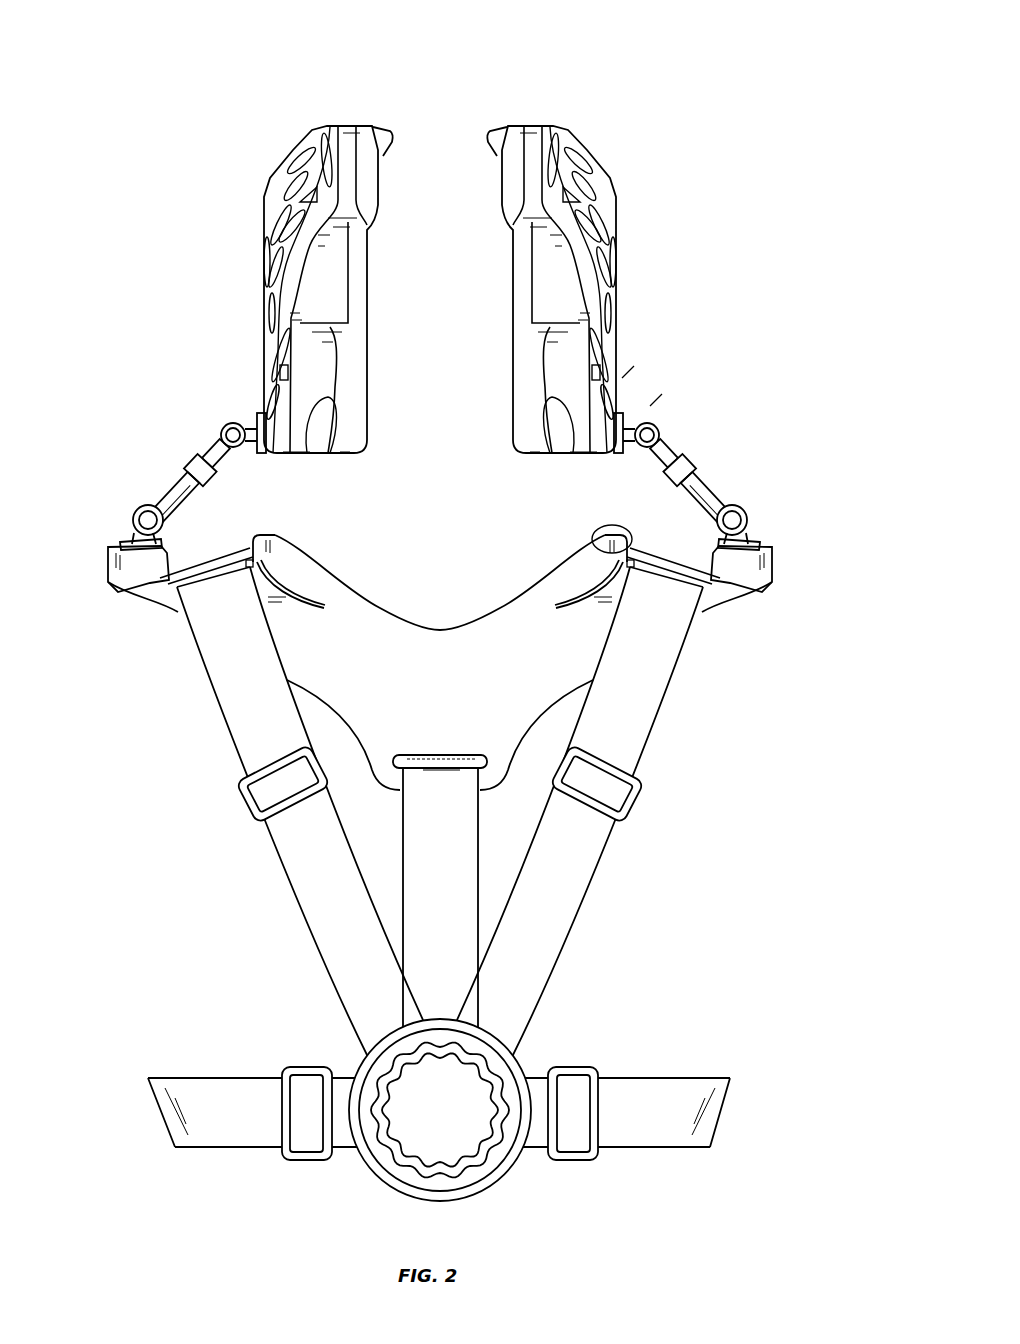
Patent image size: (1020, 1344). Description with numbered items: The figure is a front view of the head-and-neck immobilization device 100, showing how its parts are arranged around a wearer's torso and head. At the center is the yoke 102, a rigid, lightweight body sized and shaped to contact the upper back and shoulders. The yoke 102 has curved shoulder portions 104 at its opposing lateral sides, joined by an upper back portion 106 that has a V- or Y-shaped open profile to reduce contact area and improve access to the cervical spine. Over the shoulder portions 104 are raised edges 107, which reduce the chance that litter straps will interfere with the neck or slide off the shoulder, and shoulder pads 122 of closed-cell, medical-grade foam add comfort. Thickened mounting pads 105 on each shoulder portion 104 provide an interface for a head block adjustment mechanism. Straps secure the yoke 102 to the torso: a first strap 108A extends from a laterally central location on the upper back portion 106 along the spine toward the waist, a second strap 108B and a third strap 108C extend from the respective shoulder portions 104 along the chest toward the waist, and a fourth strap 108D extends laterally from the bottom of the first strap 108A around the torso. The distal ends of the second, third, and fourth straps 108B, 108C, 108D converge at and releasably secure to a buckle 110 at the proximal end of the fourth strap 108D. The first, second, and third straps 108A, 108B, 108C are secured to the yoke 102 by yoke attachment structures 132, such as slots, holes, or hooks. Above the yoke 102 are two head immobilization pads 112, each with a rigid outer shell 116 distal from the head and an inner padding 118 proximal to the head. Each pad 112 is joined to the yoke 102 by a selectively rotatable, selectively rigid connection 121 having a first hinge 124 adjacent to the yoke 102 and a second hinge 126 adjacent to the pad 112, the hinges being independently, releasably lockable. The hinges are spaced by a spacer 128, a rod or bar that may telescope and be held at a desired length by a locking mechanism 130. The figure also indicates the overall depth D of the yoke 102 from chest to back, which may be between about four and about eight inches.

The head-and-neck immobilization device 100 is at (176, 149).
The yoke 102 is at (436, 592).
The shoulder portions 104 is at (271, 608).
The mounting pads 105 is at (128, 563).
The upper back portion 106 is at (440, 727).
The raised edges 107 is at (612, 526).
The first strap 108A is at (440, 899).
The second strap 108B is at (250, 731).
The third strap 108C is at (648, 708).
The fourth strap 108D is at (667, 1092).
The buckle 110 is at (445, 1137).
The head immobilization pads 112 is at (246, 295).
The outer shell 116 is at (342, 137).
The inner padding 118 is at (382, 135).
The selectively rotatable, selectively rigid connection 121 is at (157, 468).
The shoulder pads 122 is at (287, 578).
The first hinge 124 is at (134, 517).
The second hinge 126 is at (230, 423).
The spacer 128 is at (165, 497).
The locking mechanism 130 is at (203, 458).
The yoke attachment structures 132 is at (175, 597).
The overall depth D is at (628, 373).